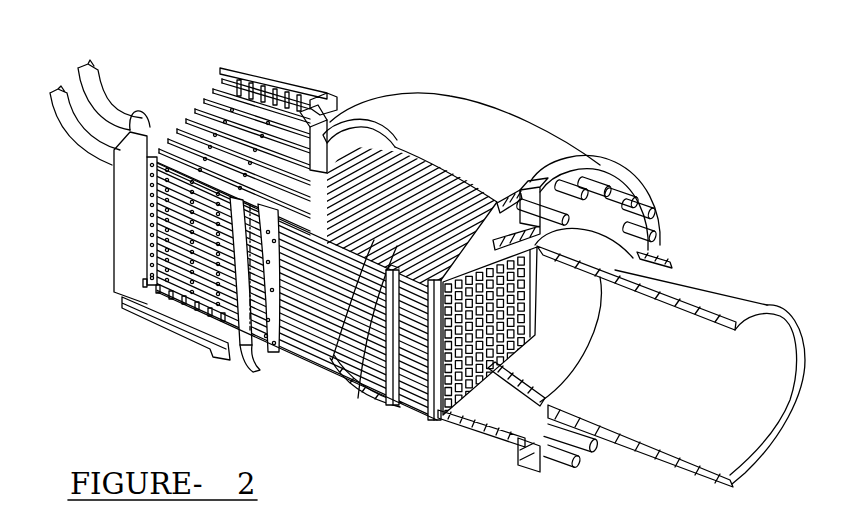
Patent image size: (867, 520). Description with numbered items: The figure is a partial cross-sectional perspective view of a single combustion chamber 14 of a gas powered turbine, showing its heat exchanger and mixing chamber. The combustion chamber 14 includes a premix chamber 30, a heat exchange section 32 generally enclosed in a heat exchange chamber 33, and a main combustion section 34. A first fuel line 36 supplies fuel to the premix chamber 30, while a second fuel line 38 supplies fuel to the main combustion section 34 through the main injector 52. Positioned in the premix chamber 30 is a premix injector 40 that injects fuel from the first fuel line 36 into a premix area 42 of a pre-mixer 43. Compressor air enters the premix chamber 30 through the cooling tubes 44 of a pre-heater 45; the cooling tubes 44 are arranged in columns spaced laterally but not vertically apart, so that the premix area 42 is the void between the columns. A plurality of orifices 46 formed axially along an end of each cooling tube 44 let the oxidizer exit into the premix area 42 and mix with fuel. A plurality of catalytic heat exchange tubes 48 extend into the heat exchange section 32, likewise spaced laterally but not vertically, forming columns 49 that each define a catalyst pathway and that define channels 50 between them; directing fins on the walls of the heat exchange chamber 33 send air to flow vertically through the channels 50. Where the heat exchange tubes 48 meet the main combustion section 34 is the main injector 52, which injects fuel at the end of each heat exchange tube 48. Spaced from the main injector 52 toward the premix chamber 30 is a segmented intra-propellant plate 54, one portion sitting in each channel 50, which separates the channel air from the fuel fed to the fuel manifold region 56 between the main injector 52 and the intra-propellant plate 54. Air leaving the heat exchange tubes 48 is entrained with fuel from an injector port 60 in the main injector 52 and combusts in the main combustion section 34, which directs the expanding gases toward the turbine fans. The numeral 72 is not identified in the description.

The combustion chamber 14 is at (622, 146).
The premix chamber 30 is at (316, 245).
The heat exchange section 32 is at (444, 78).
The heat exchange chamber 33 is at (380, 147).
The main combustion section 34 is at (665, 368).
The first fuel line 36 is at (93, 95).
The second fuel line 38 is at (60, 127).
The premix injector 40 is at (137, 219).
The premix area 42 is at (218, 176).
The pre-mixer 43 is at (177, 251).
The cooling tube 44 is at (258, 352).
The pre-heater 45 is at (283, 375).
The orifices 46 is at (188, 268).
The heat exchange tube 48 is at (340, 365).
The column 49 is at (365, 232).
The channel 50 is at (342, 231).
The main injector 52 is at (436, 392).
The intra-propellant plate 54 is at (393, 380).
The fuel manifold region 56 is at (492, 210).
The injector port 60 is at (452, 400).
The fin layers 72 is at (147, 240).